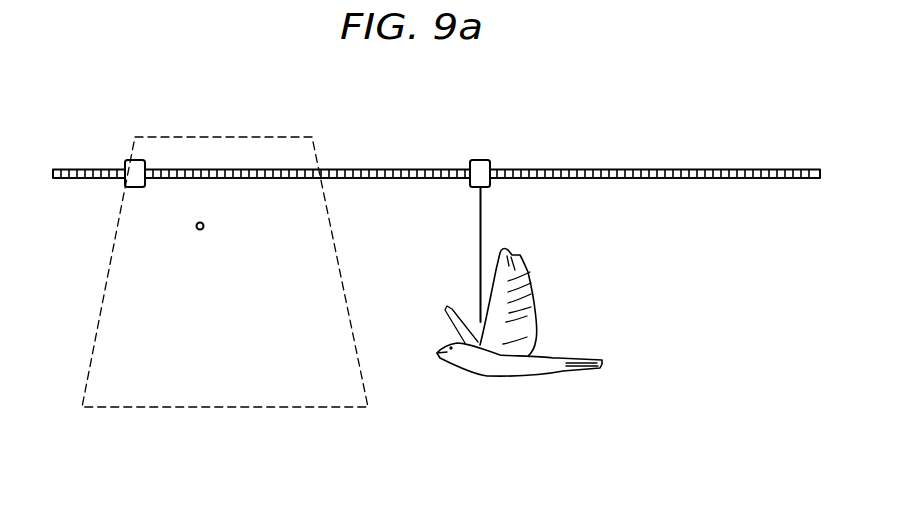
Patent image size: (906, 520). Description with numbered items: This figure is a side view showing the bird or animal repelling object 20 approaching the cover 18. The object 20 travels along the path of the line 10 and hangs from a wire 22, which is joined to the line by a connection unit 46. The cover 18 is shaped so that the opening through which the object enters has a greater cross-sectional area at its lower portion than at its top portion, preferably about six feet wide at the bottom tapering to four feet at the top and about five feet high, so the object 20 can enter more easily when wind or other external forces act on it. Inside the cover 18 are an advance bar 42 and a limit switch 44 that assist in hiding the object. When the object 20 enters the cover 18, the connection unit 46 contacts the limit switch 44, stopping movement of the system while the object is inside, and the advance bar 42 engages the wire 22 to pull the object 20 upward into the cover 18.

The line 10 is at (408, 168).
The cover 18 is at (125, 342).
The bird or animal repelling object 20 is at (515, 366).
The wire 22 is at (478, 241).
The advance bar 42 is at (196, 231).
The limit switch 44 is at (129, 160).
The connection unit 46 is at (486, 160).